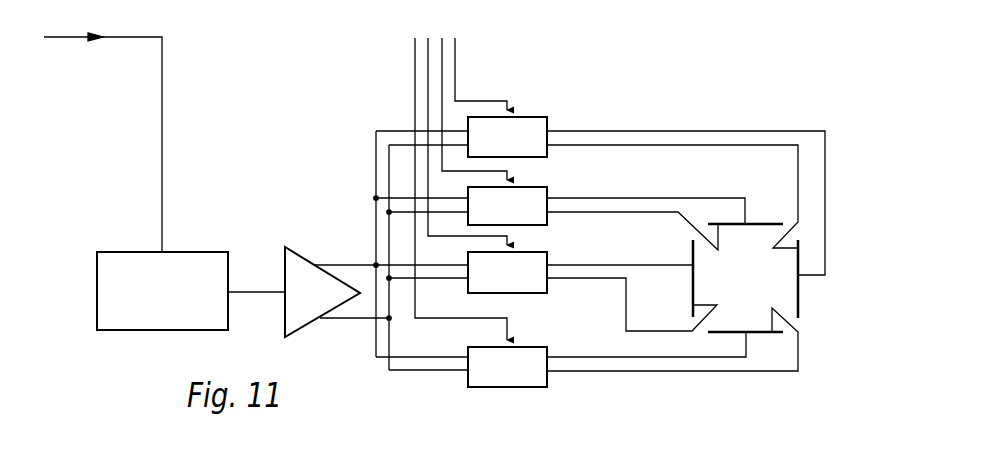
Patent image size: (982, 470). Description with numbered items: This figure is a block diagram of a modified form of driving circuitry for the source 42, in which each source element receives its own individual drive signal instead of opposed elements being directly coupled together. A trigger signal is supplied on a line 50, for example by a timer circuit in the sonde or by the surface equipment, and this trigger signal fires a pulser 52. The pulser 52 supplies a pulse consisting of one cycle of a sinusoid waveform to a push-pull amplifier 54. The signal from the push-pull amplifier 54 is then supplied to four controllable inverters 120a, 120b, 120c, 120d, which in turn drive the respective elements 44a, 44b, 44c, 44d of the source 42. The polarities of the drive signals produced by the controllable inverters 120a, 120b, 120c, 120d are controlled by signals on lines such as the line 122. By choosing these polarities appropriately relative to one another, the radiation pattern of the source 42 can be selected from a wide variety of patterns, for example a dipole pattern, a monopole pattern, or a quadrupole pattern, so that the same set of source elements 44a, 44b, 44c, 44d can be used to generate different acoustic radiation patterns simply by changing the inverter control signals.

The line 50 is at (140, 38).
The pulser 52 is at (97, 268).
The push-pull amplifier 54 is at (286, 263).
The line 122 is at (480, 100).
The controllable inverter 120a is at (540, 190).
The controllable inverter 120b is at (541, 384).
The controllable inverter 120c is at (540, 289).
The controllable inverter 120d is at (468, 127).
The source element 44a is at (760, 222).
The source element 44b is at (775, 340).
The source element 44c is at (692, 250).
The source element 44d is at (798, 302).
The source 42 is at (753, 270).